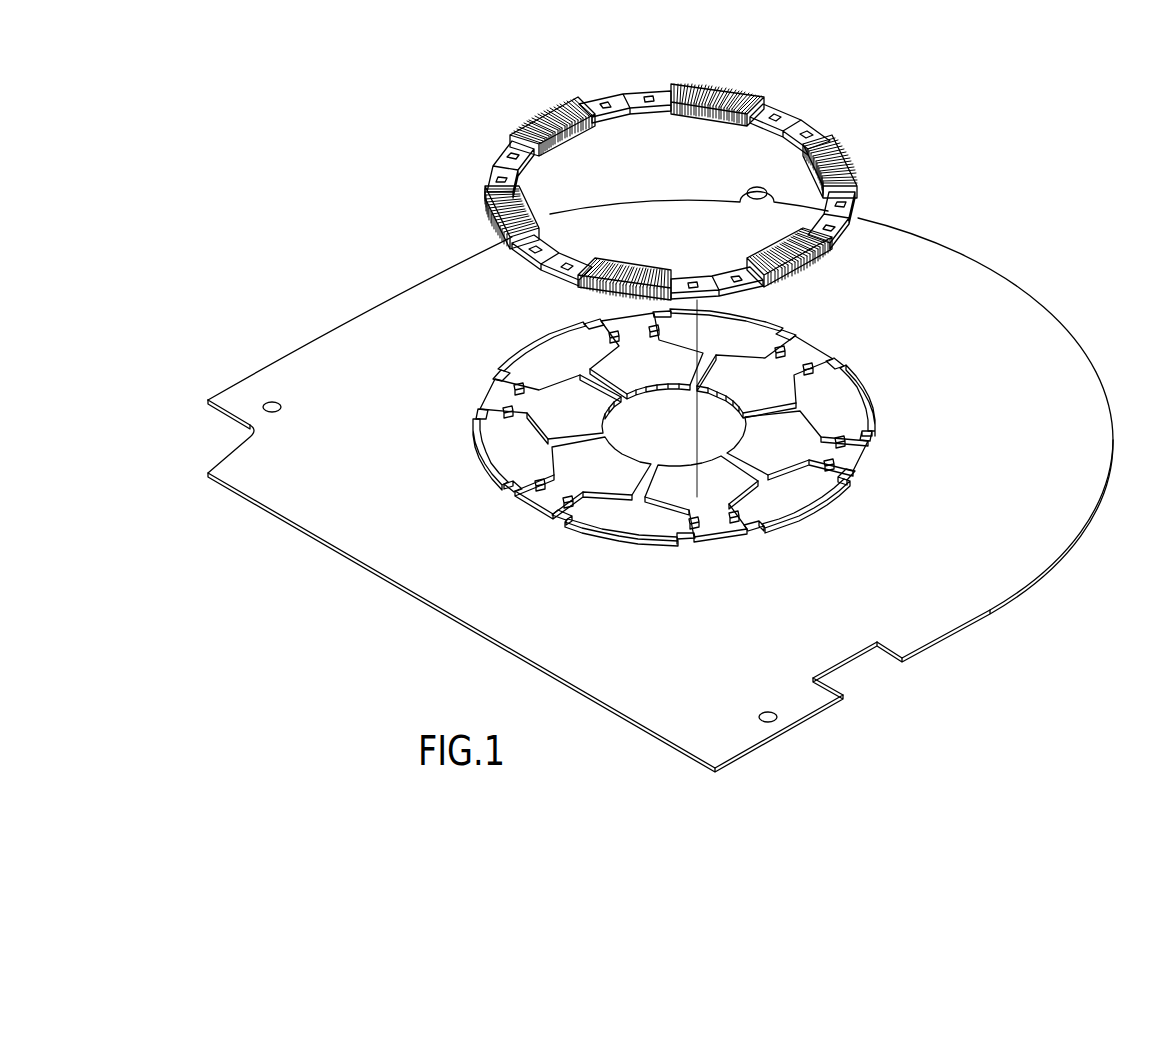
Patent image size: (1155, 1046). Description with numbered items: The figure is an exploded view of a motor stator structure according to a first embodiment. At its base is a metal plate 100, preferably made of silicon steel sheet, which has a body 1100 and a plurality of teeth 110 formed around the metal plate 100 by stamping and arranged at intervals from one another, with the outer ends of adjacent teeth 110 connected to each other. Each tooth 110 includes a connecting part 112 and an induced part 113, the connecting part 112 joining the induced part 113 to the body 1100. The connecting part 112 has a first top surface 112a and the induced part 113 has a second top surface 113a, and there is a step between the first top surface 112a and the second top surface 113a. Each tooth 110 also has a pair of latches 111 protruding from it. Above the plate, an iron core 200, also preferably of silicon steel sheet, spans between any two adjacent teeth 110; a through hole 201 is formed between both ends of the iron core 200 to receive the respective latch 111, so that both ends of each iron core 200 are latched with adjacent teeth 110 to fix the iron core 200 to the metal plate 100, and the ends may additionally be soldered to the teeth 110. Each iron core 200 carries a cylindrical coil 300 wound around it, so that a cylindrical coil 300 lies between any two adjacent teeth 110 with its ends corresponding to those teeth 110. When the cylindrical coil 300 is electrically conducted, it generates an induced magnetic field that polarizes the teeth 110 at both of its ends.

The metal plate 100 is at (990, 262).
The body 1100 is at (497, 582).
The teeth 110 is at (721, 447).
The latches 111 is at (842, 437).
The connecting part 112 is at (723, 427).
The first top surface 112a is at (840, 450).
The induced part 113 is at (677, 449).
The second top surface 113a is at (776, 441).
The iron core 200 is at (705, 191).
The through hole 201 is at (810, 126).
The cylindrical coil 300 is at (843, 148).